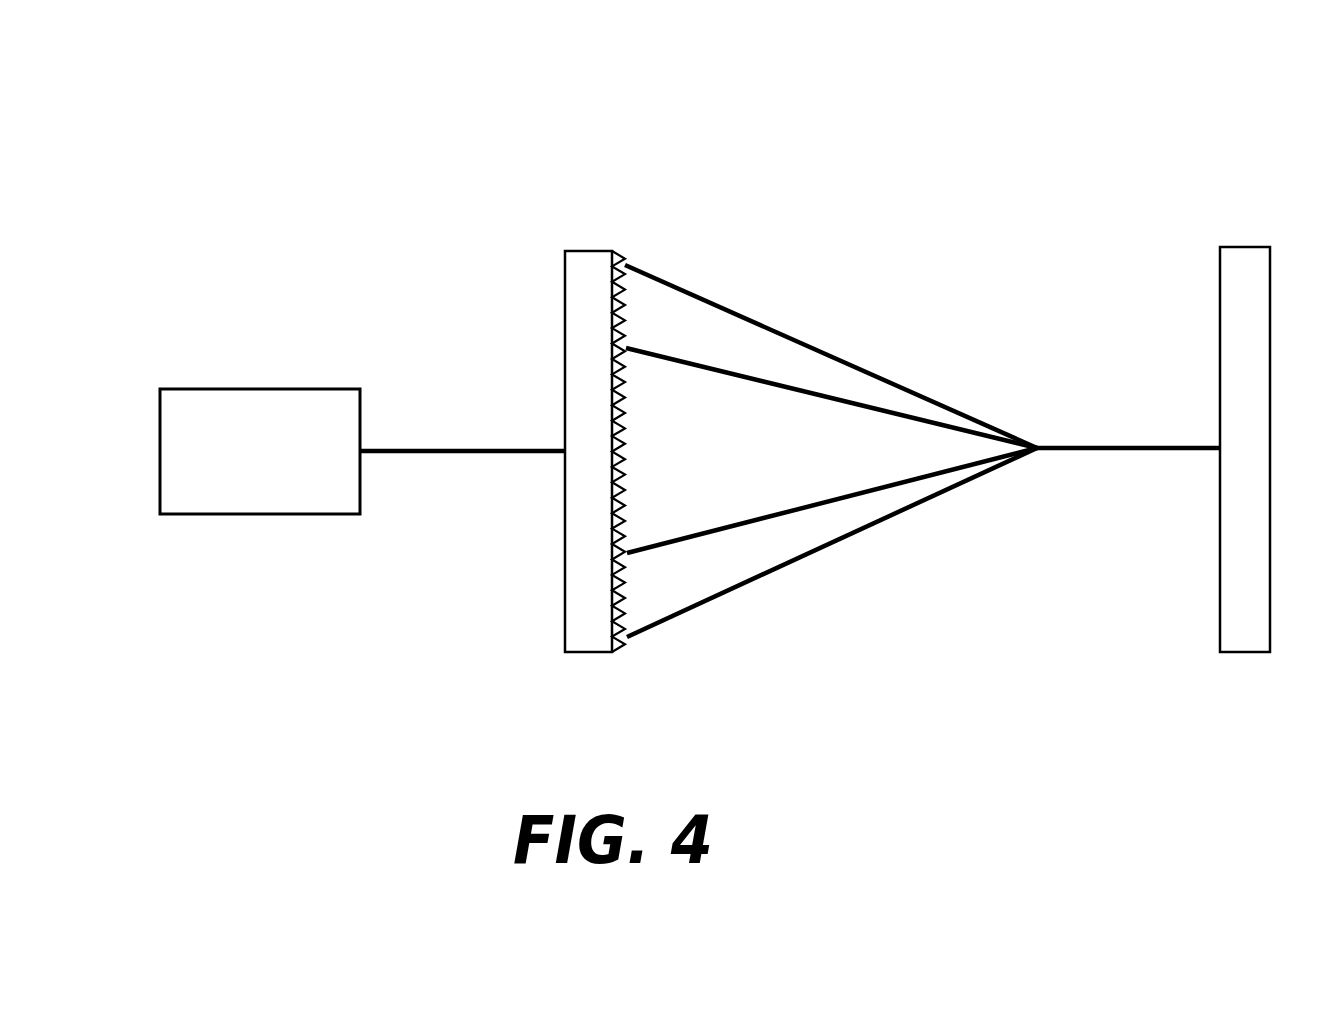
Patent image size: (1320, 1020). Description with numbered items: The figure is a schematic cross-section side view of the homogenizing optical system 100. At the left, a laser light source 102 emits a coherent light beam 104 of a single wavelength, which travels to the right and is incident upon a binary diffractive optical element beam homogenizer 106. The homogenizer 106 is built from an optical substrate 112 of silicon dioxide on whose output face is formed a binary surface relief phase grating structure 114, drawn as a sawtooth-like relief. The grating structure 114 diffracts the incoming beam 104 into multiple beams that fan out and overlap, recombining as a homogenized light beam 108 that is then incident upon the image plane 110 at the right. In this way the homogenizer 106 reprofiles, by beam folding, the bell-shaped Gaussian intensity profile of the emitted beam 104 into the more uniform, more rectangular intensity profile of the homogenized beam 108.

The homogenizing optical system 100 is at (880, 174).
The laser light source 102 is at (246, 389).
The coherent light beam 104 is at (451, 450).
The binary diffractive optical element beam homogenizer 106 is at (605, 452).
The homogenized light beam 108 is at (1107, 447).
The image plane 110 is at (1245, 247).
The optical substrate 112 is at (587, 655).
The binary surface relief phase grating structure 114 is at (618, 655).